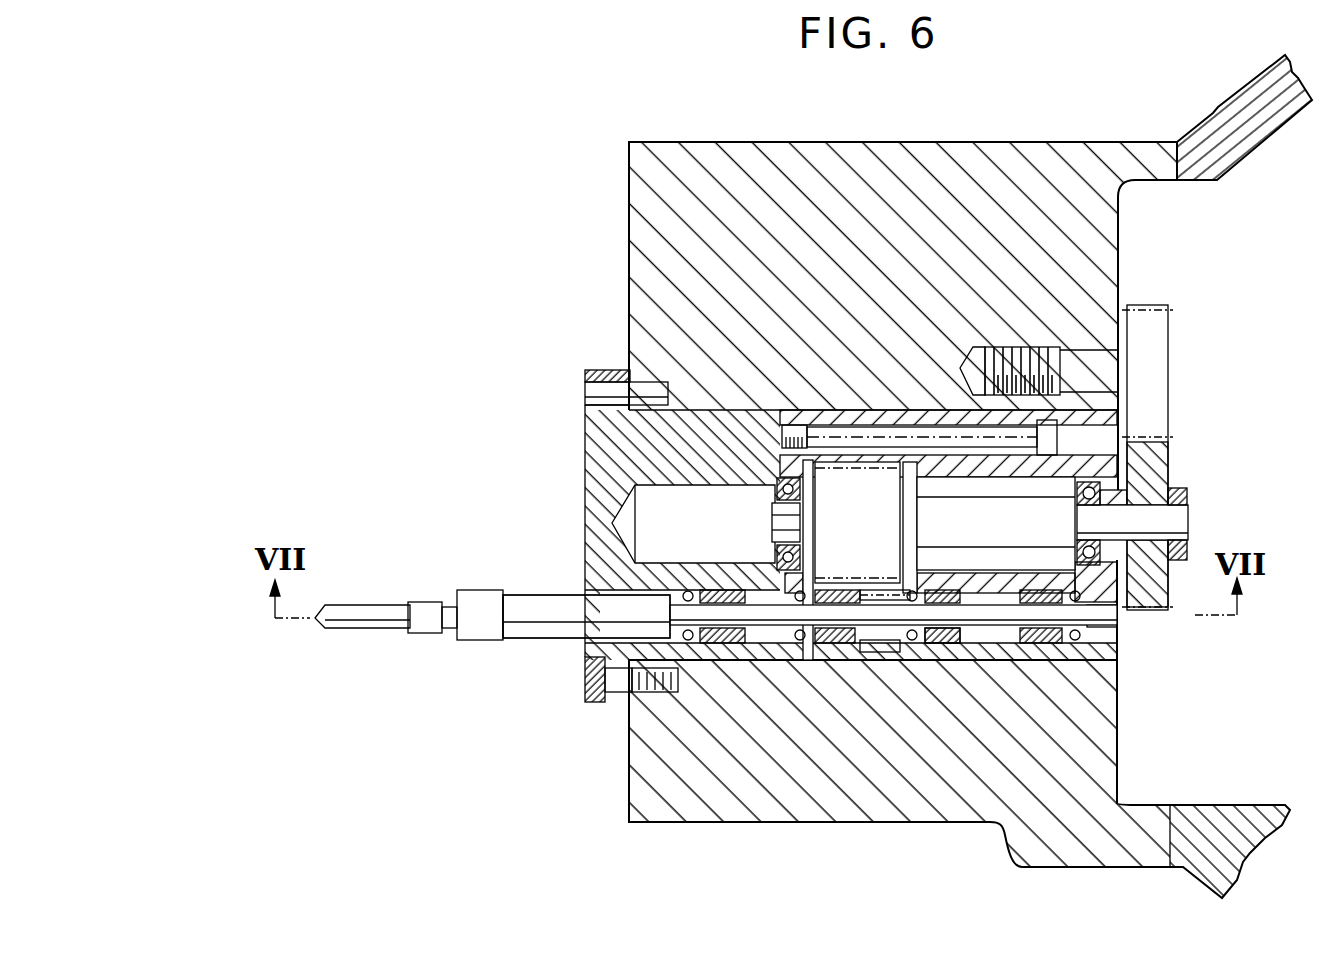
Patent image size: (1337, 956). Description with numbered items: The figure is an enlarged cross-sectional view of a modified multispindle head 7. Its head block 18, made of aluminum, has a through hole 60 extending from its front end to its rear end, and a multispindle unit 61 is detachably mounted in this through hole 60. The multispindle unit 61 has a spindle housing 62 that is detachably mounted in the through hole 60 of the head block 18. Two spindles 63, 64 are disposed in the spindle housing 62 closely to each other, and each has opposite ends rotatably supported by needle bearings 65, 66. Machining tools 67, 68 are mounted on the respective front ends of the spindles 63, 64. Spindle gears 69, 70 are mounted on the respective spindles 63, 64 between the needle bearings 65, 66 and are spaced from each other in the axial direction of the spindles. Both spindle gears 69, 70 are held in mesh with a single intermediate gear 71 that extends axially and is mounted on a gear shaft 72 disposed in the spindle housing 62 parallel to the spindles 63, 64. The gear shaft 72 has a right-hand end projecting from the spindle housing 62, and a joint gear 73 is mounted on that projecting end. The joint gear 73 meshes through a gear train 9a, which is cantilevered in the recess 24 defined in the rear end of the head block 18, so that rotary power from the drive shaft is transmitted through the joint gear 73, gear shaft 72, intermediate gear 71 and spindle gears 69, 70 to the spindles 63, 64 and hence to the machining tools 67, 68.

The multispindle head 7 is at (700, 140).
The head block 18 is at (812, 142).
The recess 24 is at (1120, 220).
The gear train 9a is at (1157, 297).
The through hole 60 is at (888, 420).
The multispindle unit 61 is at (567, 380).
The spindle housing 62 is at (866, 427).
The spindle 63 is at (952, 643).
The spindle 64 is at (942, 635).
The needle bearing 65 is at (715, 648).
The needle bearing 66 is at (1082, 664).
The machining tool 67 is at (370, 612).
The machining tool 68 is at (586, 616).
The spindle gear 69 is at (830, 643).
The spindle gear 70 is at (880, 652).
The intermediate gear 71 is at (845, 522).
The gear shaft 72 is at (950, 518).
The joint gear 73 is at (1140, 617).